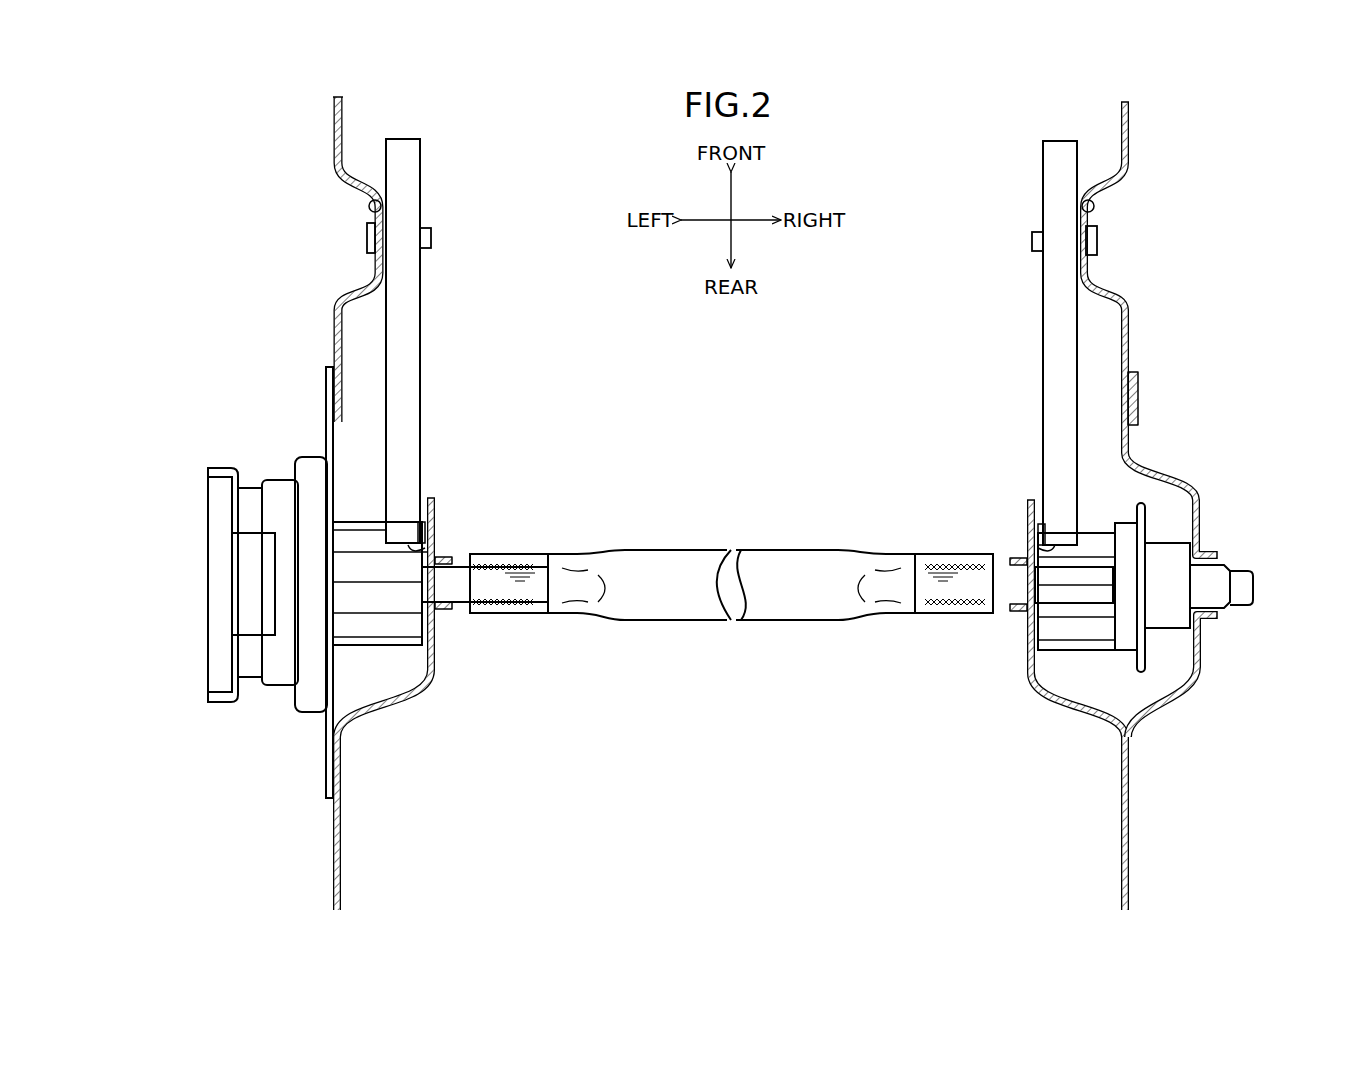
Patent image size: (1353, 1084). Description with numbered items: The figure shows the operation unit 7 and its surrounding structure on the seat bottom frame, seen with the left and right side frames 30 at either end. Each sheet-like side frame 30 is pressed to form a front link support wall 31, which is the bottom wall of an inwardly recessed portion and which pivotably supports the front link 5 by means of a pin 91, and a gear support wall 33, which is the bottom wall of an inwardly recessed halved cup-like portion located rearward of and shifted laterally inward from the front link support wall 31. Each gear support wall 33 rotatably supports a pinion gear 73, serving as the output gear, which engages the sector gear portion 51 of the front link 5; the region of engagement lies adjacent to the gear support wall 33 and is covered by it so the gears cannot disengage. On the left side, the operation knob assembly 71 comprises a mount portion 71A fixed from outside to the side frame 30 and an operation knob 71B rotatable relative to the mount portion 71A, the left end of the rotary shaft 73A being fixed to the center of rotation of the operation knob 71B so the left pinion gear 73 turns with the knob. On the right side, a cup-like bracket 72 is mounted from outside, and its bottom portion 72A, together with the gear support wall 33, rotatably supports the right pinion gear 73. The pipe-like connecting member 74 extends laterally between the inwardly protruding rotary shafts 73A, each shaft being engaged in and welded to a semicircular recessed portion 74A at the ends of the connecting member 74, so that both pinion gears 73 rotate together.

The front link 5 is at (423, 287).
The operation unit 7 is at (175, 473).
The side frame 30 is at (334, 140).
The front link support wall 31 is at (381, 207).
The gear support wall 33 is at (438, 652).
The sector gear portion 51 is at (413, 547).
The operation knob assembly 71 is at (315, 592).
The mount portion 71A is at (302, 670).
The operation knob 71B is at (233, 632).
The bracket 72 is at (1161, 606).
The bottom portion 72A is at (1201, 648).
The pinion gear 73 is at (745, 662).
The rotary shaft 73A is at (518, 597).
The connecting member 74 is at (731, 605).
The recessed portion 74A is at (575, 572).
The pin 91 is at (366, 237).